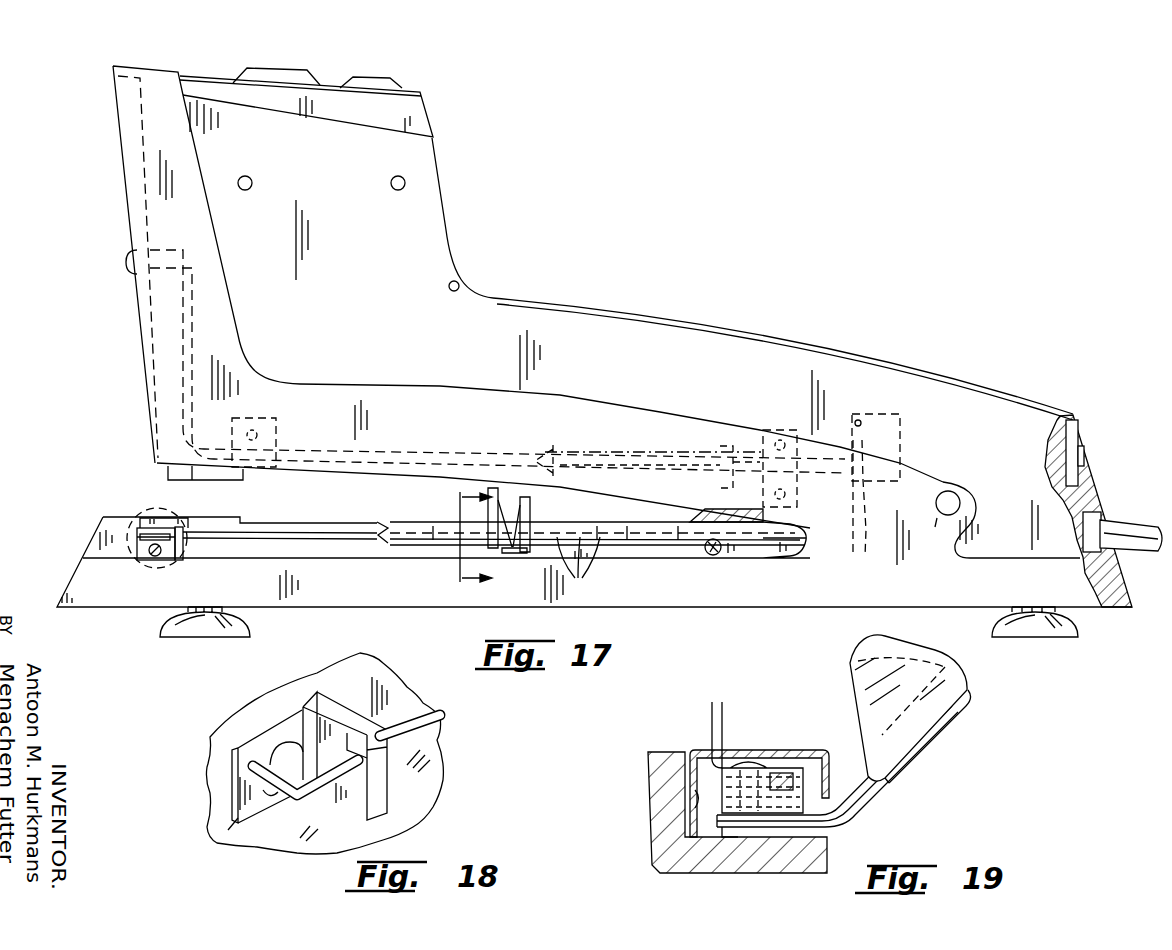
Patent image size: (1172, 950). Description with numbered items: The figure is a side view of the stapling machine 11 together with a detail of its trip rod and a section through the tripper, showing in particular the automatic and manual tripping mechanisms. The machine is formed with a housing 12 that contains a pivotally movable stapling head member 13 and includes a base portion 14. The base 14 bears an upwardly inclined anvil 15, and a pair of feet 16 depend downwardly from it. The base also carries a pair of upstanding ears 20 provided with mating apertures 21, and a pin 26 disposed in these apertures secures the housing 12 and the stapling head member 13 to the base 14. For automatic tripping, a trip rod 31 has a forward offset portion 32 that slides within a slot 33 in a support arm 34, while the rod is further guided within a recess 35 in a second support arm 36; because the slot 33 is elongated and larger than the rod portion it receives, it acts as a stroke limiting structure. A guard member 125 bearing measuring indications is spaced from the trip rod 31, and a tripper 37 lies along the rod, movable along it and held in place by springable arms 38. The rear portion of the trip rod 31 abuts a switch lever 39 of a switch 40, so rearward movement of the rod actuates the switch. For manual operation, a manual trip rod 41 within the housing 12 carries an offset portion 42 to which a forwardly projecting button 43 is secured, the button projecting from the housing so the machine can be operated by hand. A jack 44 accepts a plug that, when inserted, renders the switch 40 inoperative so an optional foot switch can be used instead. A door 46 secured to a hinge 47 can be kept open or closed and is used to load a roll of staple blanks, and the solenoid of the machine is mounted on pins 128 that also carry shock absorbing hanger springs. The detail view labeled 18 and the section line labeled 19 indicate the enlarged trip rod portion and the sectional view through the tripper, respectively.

In FIG. 17, the stapling machine 11 is at (495, 254).
In FIG. 17, the housing 12 is at (960, 400).
In FIG. 17, the stapling head member 13 is at (218, 480).
In FIG. 17, the base portion 14 is at (700, 598).
In FIG. 17, the anvil 15 is at (225, 521).
In FIG. 17, the feet 16 is at (205, 630).
In FIG. 17, the detail view indicator 18 is at (140, 512).
In FIG. 17, the section line 19 is at (458, 538).
In FIG. 17, the upstanding ears 20 is at (975, 492).
In FIG. 17, the mating apertures 21 is at (944, 491).
In FIG. 17, the pin 26 is at (753, 560).
In FIG. 17, the trip rod 31 is at (298, 540).
In FIG. 18, the trip rod 31 is at (432, 712).
In FIG. 19, the trip rod 31 is at (789, 775).
In FIG. 17, the forward offset portion 32 is at (140, 539).
In FIG. 18, the forward offset portion 32 is at (253, 773).
In FIG. 17, the slot 33 is at (154, 518).
In FIG. 18, the slot 33 is at (275, 750).
In FIG. 17, the support arm 34 is at (140, 558).
In FIG. 18, the support arm 34 is at (245, 798).
In FIG. 18, the recess 35 is at (375, 745).
In FIG. 17, the support arm 36 is at (173, 562).
In FIG. 18, the support arm 36 is at (357, 795).
In FIG. 17, the tripper 37 is at (518, 550).
In FIG. 19, the tripper 37 is at (922, 770).
In FIG. 17, the springable arms 38 is at (499, 497).
In FIG. 19, the springable arms 38 is at (922, 688).
In FIG. 17, the switch lever 39 is at (858, 560).
In FIG. 17, the switch 40 is at (885, 418).
In FIG. 17, the manual trip rod 41 is at (420, 448).
In FIG. 17, the offset portion 42 is at (205, 335).
In FIG. 17, the button 43 is at (126, 263).
In FIG. 17, the jack 44 is at (1080, 440).
In FIG. 17, the door 46 is at (775, 334).
In FIG. 17, the hinge 47 is at (460, 285).
In FIG. 17, the guard member 125 is at (632, 537).
In FIG. 17, the pins 128 is at (252, 178).